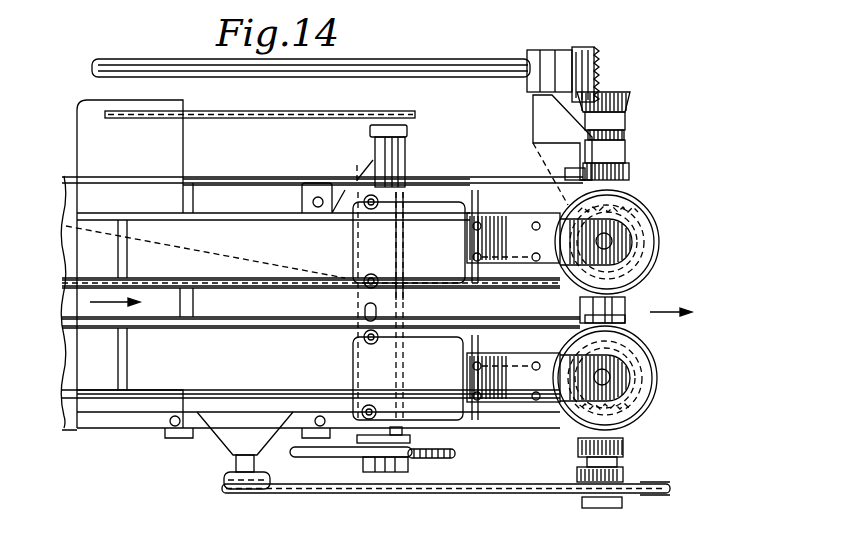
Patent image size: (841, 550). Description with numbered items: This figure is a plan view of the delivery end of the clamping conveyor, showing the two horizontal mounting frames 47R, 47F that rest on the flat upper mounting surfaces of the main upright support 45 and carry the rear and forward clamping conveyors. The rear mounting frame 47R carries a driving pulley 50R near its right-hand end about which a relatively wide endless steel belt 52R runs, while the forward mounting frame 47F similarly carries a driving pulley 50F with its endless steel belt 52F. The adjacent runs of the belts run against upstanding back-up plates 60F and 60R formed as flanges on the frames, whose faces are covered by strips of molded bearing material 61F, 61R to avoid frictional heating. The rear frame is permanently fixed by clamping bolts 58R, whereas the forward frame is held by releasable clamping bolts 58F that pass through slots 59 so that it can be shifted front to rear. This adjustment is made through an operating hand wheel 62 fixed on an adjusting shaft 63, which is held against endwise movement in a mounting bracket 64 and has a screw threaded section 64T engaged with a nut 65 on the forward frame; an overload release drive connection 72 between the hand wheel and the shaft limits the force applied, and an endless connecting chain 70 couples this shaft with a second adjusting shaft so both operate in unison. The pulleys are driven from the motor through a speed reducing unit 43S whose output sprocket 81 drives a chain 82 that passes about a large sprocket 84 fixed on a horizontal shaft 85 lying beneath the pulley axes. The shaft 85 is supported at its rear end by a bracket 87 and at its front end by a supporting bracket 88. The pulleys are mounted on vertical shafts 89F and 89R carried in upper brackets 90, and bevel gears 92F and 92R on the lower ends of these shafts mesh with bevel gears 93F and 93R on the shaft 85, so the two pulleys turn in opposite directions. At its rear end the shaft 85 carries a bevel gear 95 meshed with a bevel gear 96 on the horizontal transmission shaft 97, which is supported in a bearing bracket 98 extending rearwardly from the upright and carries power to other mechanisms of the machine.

The horizontal transmission shaft 97 is at (400, 63).
The bevel gear 96 is at (596, 62).
The bevel gear 95 is at (632, 100).
The bearing bracket 98 is at (540, 122).
The bracket 87 is at (565, 173).
The endless connecting chain 70 is at (240, 110).
The endless steel belt 52R is at (92, 177).
The endless steel belt 52F is at (85, 430).
The rear mounting frame 47R is at (228, 177).
The forward mounting frame 47F is at (143, 392).
The mounting bracket 64 is at (370, 167).
The adjusting shaft 63 is at (407, 150).
The clamping bolts 58R is at (371, 275).
The releasable clamping bolts 58F is at (378, 345).
The slots 59 is at (378, 312).
The back-up plate 60R is at (145, 283).
The strip of molded bearing material 61R is at (307, 252).
The back-up plate 60F is at (168, 330).
The strip of molded bearing material 61F is at (245, 330).
The upper bracket 90 is at (512, 250).
The driving pulley 50R is at (645, 230).
The vertical shaft 89R is at (652, 215).
The bevel gear 92R is at (648, 252).
The bevel gear 93R is at (650, 202).
The driving pulley 50F is at (635, 356).
The bevel gear 92F is at (640, 380).
The vertical shaft 89F is at (650, 386).
The bevel gear 93F is at (655, 400).
The upright support 45 is at (618, 302).
The shaft 85 is at (615, 318).
The supporting bracket 88 is at (628, 448).
The chain 82 is at (418, 492).
The sprocket 84 is at (660, 498).
The sprocket 81 is at (226, 486).
The speed reducing unit 43S is at (232, 437).
The overload release drive connection 72 is at (366, 464).
The operating hand wheel 62 is at (432, 458).
The screw threaded section 64T is at (412, 438).
The nut 65 is at (400, 428).